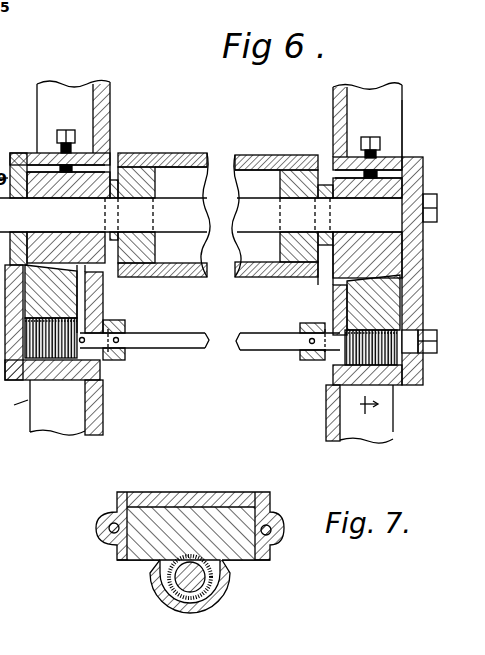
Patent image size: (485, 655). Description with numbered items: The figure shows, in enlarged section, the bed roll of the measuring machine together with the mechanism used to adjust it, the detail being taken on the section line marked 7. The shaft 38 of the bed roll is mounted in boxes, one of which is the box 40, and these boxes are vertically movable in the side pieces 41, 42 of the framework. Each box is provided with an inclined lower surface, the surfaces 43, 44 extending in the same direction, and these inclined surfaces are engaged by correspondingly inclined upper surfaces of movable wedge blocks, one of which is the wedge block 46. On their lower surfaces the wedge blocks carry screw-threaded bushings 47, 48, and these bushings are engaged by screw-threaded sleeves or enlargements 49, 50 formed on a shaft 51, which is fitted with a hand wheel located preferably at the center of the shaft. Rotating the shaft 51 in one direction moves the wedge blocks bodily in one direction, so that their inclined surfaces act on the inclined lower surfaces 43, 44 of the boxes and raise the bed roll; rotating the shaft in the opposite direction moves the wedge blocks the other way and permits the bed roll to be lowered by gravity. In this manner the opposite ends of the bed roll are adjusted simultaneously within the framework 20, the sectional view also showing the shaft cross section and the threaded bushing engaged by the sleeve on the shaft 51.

In FIG. 6, the section line 7- 7 is at (398, 307).
In FIG. 6, the housing 20 is at (14, 409).
In FIG. 6, the shaft of the bed roll 38 is at (239, 219).
In FIG. 6, the box 40 is at (345, 185).
In FIG. 7, the box 40 is at (246, 503).
In FIG. 6, the side piece 41 is at (103, 400).
In FIG. 6, the side piece 42 is at (335, 405).
In FIG. 7, the side piece 42 is at (120, 560).
In FIG. 6, the inclined lower surface 43 is at (100, 284).
In FIG. 6, the inclined lower surface 44 is at (355, 290).
In FIG. 6, the wedge block 46 is at (355, 306).
In FIG. 7, the wedge block 46 is at (250, 551).
In FIG. 6, the screw-threaded bushing 47 is at (67, 310).
In FIG. 6, the screw-threaded bushing 48 is at (353, 317).
In FIG. 7, the screw-threaded bushing 48 is at (160, 572).
In FIG. 6, the screw-threaded sleeve or enlargement 49 is at (58, 356).
In FIG. 6, the screw-threaded sleeve or enlargement 50 is at (385, 372).
In FIG. 7, the screw-threaded sleeve or enlargement 50 is at (203, 588).
In FIG. 6, the shaft 51 is at (210, 352).